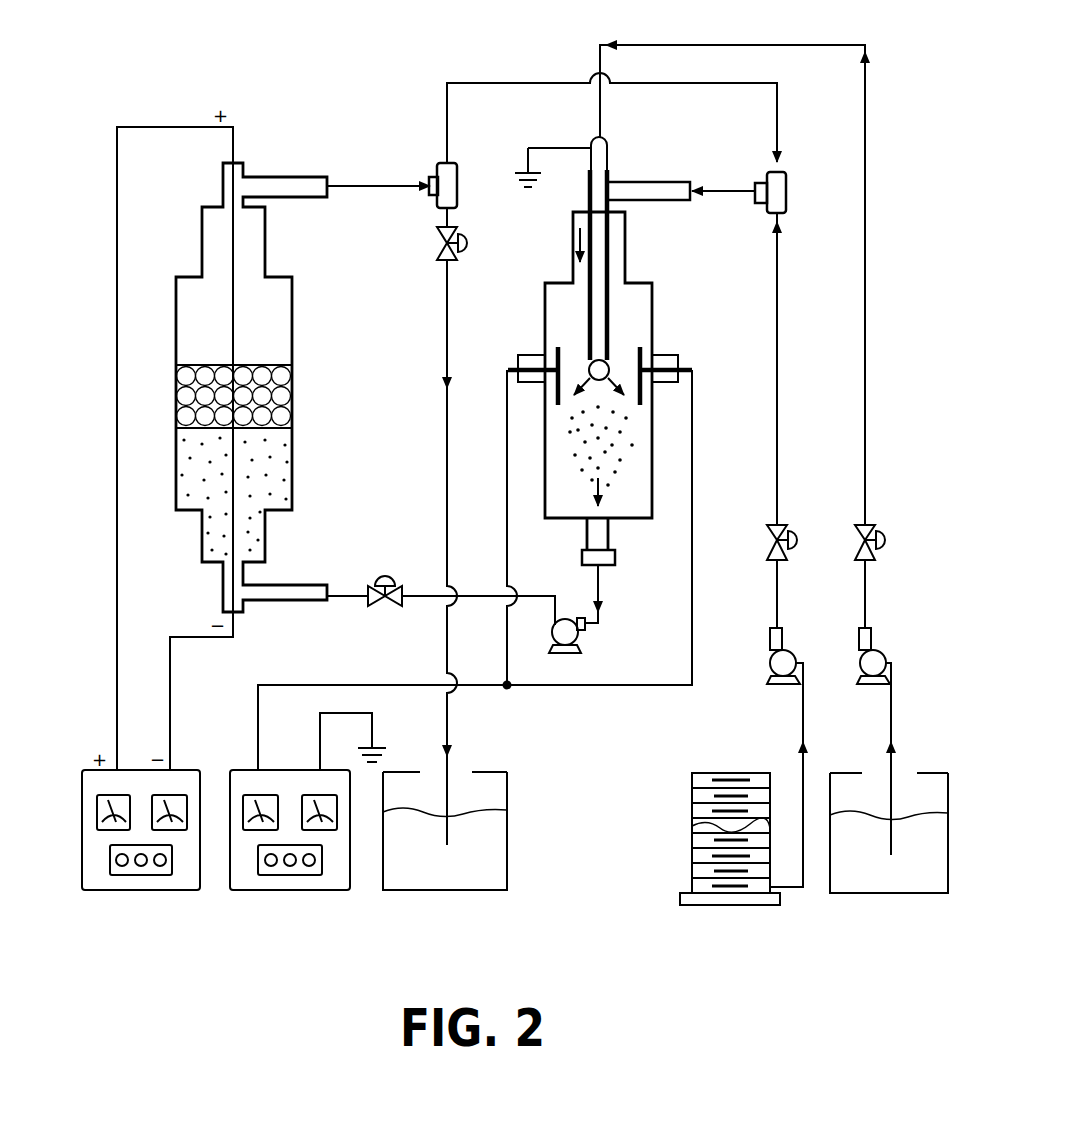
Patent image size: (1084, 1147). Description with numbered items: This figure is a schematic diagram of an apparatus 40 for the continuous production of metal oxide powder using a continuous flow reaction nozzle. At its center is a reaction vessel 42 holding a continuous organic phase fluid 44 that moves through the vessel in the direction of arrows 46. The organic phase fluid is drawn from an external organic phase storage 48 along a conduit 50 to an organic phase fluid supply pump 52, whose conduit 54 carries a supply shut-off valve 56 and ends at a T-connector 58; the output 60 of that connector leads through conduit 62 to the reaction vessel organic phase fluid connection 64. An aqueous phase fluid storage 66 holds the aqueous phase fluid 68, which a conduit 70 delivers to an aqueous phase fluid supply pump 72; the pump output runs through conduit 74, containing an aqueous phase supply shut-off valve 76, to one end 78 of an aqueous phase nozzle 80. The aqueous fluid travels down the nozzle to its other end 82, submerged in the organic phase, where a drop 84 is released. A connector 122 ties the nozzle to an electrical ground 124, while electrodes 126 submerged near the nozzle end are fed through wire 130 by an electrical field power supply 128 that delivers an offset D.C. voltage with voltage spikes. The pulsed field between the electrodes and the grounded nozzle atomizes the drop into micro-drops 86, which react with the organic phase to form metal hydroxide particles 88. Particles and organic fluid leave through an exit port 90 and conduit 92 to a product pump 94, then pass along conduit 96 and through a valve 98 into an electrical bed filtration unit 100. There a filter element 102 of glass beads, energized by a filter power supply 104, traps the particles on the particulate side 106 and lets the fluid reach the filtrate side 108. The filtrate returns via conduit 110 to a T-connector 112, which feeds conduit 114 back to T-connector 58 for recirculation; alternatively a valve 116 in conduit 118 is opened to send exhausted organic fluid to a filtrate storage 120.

The apparatus 40 is at (276, 68).
The reaction vessel 42 is at (670, 444).
The continuous organic phase fluid 44 is at (277, 312).
The arrows 46 is at (578, 243).
The organic phase storage 48 is at (742, 910).
The conduit 50 is at (795, 889).
The organic phase fluid supply pump 52 is at (777, 688).
The conduit 54 is at (779, 372).
The supply shut-off valve 56 is at (798, 538).
The T-connector 58 is at (788, 190).
The output 60 is at (763, 183).
The conduit 62 is at (730, 192).
The reaction vessel organic phase fluid connection 64 is at (665, 201).
The aqueous phase fluid storage 66 is at (863, 903).
The aqueous phase fluid 68 is at (914, 883).
The conduit 70 is at (893, 712).
The aqueous phase fluid supply pump 72 is at (875, 688).
The conduit 74 is at (867, 372).
The aqueous phase supply shut-off valve 76 is at (888, 538).
The end of aqueous phase nozzle 78 is at (600, 132).
The aqueous phase nozzle 80 is at (609, 160).
The end of aqueous phase nozzle 82 is at (547, 332).
The drop 84 is at (608, 368).
The micro-drops 86 is at (570, 440).
The metal hydroxide particles 88 is at (270, 497).
The exit port 90 is at (616, 557).
The conduit 92 is at (600, 598).
The product pump 94 is at (568, 656).
The conduit 96 is at (470, 590).
The valve 98 is at (383, 574).
The electrical bed filtration unit 100 is at (270, 548).
The filter element 102 is at (268, 392).
The filter power supply 104 is at (170, 892).
The particulate side 106 is at (292, 460).
The filtrate side 108 is at (212, 238).
The conduit 110 is at (368, 184).
The T-connector 112 is at (437, 166).
The conduit 114 is at (490, 83).
The valve 116 is at (437, 243).
The conduit 118 is at (445, 346).
The filtrate storage 120 is at (480, 892).
The connector 122 is at (565, 147).
The electrical ground 124 is at (533, 190).
The electrodes 126 is at (558, 403).
The electrical field power supply 128 is at (310, 892).
The wire 130 is at (405, 683).